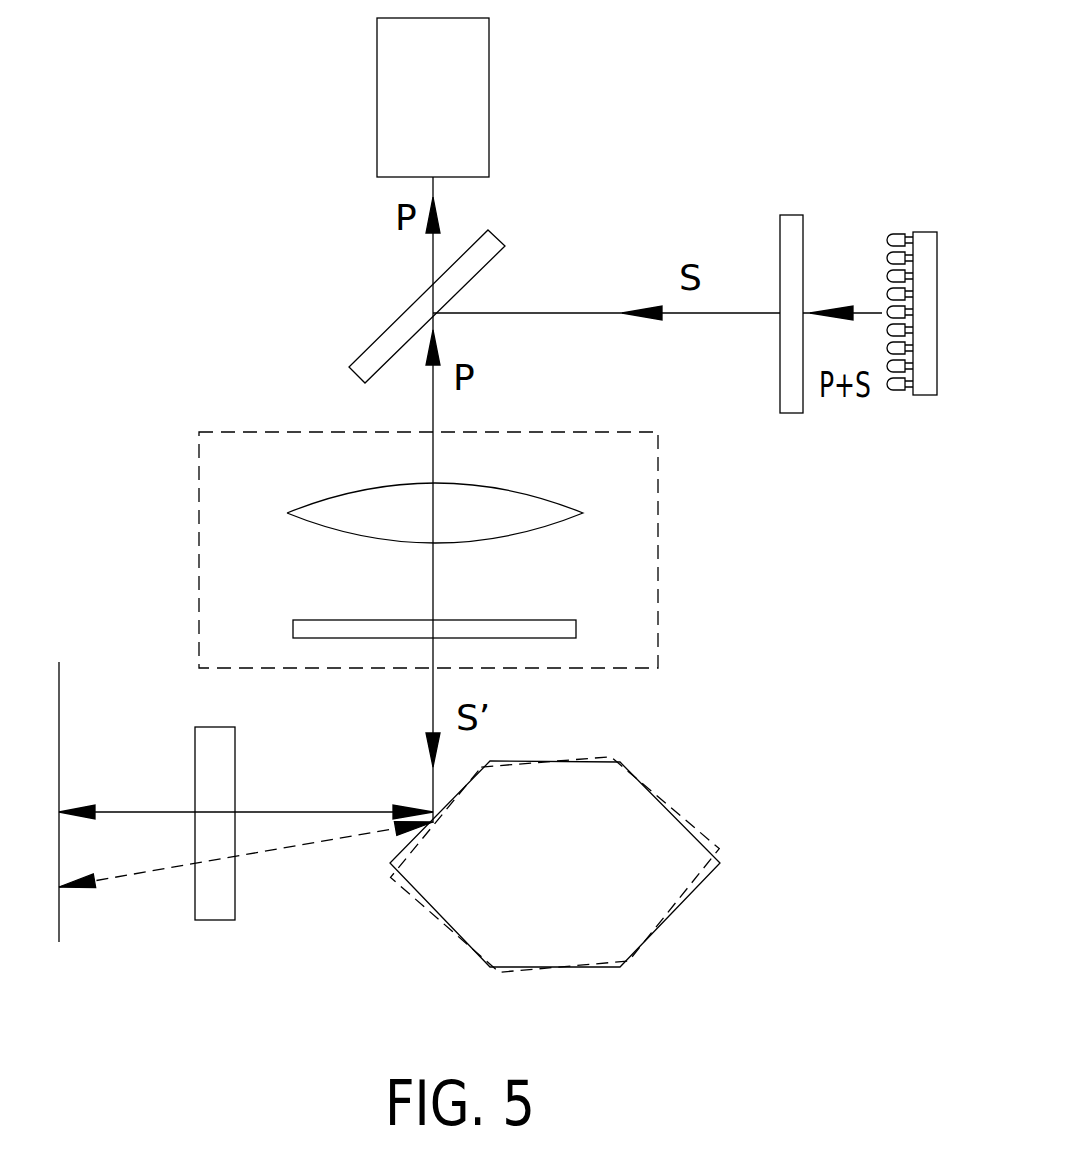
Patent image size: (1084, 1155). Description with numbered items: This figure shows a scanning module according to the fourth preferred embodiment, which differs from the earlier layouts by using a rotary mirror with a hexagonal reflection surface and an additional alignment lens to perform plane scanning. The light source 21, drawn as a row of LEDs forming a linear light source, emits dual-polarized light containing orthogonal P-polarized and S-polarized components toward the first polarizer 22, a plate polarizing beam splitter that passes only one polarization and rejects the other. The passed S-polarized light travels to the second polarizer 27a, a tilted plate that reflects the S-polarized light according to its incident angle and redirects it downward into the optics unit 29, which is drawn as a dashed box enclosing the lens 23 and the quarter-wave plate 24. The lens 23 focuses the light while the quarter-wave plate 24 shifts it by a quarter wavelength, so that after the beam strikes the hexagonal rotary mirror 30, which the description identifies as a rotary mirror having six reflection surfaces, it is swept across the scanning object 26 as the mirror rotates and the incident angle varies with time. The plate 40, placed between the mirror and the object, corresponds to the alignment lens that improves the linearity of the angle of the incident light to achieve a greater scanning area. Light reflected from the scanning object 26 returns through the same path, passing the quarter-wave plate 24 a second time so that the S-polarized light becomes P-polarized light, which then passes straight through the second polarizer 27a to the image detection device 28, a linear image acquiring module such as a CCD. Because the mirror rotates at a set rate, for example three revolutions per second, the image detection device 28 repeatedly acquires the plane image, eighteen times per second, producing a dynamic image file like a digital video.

The light source 21 is at (923, 393).
The first polarizer 22 is at (793, 402).
The lens 23 is at (508, 500).
The quarter-wave plate 24 is at (525, 623).
The scanning object 26 is at (59, 705).
The second polarizer 27a is at (492, 242).
The image detection device 28 is at (471, 90).
The optics unit 29 is at (658, 512).
The rotating polygon mirror 30 is at (762, 801).
The plate 40 is at (205, 910).